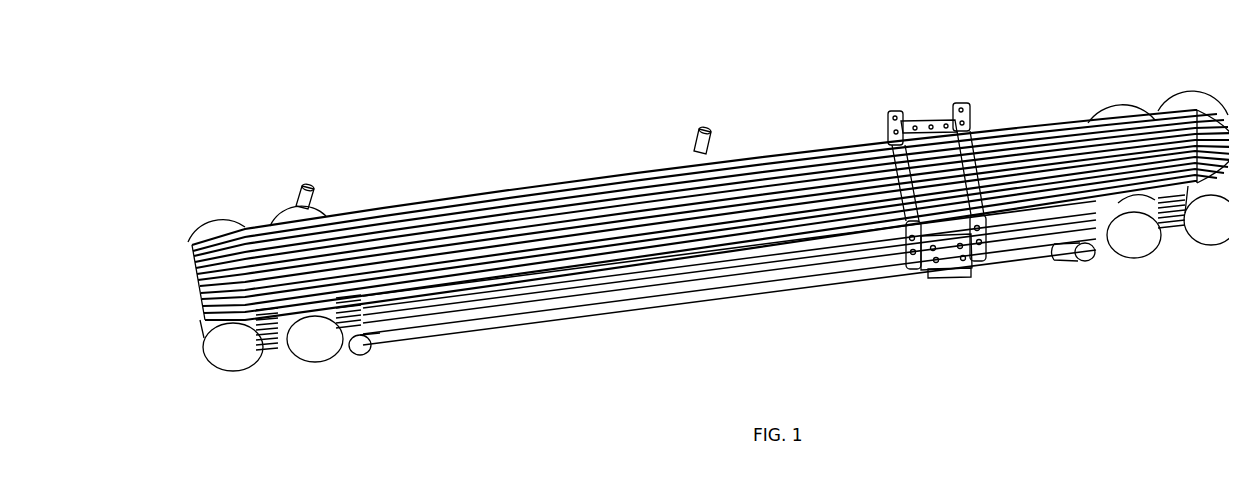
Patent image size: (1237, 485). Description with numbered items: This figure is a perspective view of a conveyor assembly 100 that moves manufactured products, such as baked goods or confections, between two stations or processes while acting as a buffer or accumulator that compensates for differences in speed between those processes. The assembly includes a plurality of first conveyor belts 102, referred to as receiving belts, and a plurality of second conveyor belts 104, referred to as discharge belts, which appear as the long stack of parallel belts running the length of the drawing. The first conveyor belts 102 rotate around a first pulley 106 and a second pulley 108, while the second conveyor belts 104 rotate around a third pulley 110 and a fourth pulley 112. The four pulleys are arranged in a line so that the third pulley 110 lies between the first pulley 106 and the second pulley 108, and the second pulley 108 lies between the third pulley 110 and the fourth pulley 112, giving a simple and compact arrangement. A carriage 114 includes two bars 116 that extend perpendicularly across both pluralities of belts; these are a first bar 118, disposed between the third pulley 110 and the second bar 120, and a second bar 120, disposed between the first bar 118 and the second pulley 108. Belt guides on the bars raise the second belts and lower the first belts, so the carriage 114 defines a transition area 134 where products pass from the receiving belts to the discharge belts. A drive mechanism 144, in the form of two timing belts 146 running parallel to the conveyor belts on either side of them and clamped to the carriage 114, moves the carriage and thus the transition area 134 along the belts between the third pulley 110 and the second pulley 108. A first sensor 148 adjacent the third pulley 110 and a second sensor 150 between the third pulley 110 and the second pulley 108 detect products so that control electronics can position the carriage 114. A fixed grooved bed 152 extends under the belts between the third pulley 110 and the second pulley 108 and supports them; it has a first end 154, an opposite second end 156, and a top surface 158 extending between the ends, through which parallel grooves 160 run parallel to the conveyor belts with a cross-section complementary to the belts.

The conveyor assembly 100 is at (405, 160).
The first conveyor belts 102 is at (252, 216).
The second conveyor belts 104 is at (1157, 97).
The first pulley 106 is at (225, 340).
The second pulley 108 is at (1125, 228).
The third pulley 110 is at (305, 332).
The fourth pulley 112 is at (1205, 215).
The carriage 114 is at (912, 113).
The bars 116 is at (887, 103).
The first bar 118 is at (880, 118).
The second bar 120 is at (957, 102).
The transition area 134 is at (977, 275).
The drive mechanism 144 is at (453, 333).
The timing belts 146 is at (537, 172).
The first sensor 148 is at (309, 176).
The second sensor 150 is at (688, 120).
The grooved bed 152 is at (690, 260).
The first end 154 is at (367, 312).
The second end 156 is at (1067, 210).
The top surface 158 is at (502, 285).
The parallel grooves 160 is at (567, 267).